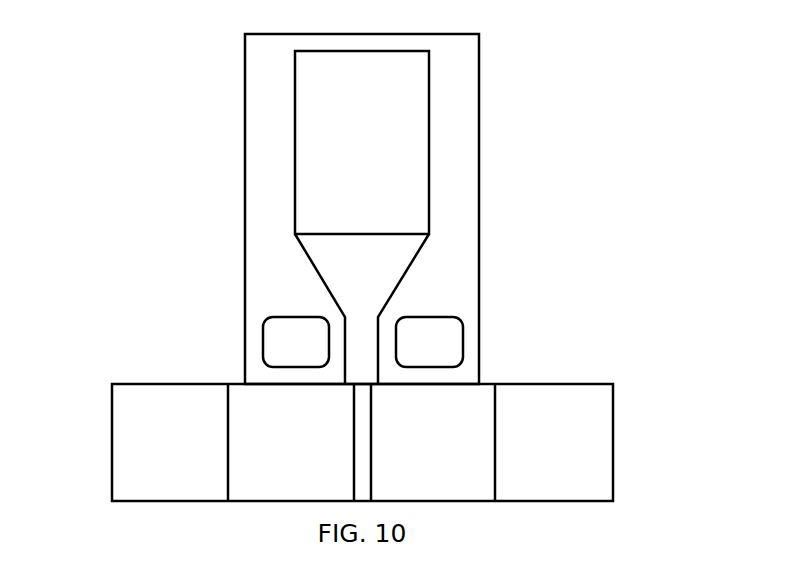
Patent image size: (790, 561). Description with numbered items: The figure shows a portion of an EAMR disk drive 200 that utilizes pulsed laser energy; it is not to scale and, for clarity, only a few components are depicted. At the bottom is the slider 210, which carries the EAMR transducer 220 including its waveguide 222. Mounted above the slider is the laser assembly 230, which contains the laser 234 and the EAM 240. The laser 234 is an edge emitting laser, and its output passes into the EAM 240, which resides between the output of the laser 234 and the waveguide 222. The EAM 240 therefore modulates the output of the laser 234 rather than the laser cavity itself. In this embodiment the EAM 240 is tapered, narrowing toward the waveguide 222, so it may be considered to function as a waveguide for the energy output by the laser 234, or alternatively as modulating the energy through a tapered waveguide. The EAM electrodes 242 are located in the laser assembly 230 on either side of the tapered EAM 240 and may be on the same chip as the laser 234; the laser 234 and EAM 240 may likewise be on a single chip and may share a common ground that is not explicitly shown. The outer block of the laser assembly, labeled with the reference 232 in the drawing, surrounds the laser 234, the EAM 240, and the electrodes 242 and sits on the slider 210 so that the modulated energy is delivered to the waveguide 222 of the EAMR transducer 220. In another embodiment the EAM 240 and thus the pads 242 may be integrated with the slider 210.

The EAMR disk drive 200 is at (556, 46).
The laser assembly 230 is at (120, 148).
The laser submount 232 is at (479, 165).
The laser 234 is at (295, 168).
The EAM 240 is at (400, 282).
The EAM electrodes 242 is at (263, 318).
The slider 210 is at (640, 432).
The EAMR transducer 220 is at (495, 433).
The waveguide 222 is at (354, 433).